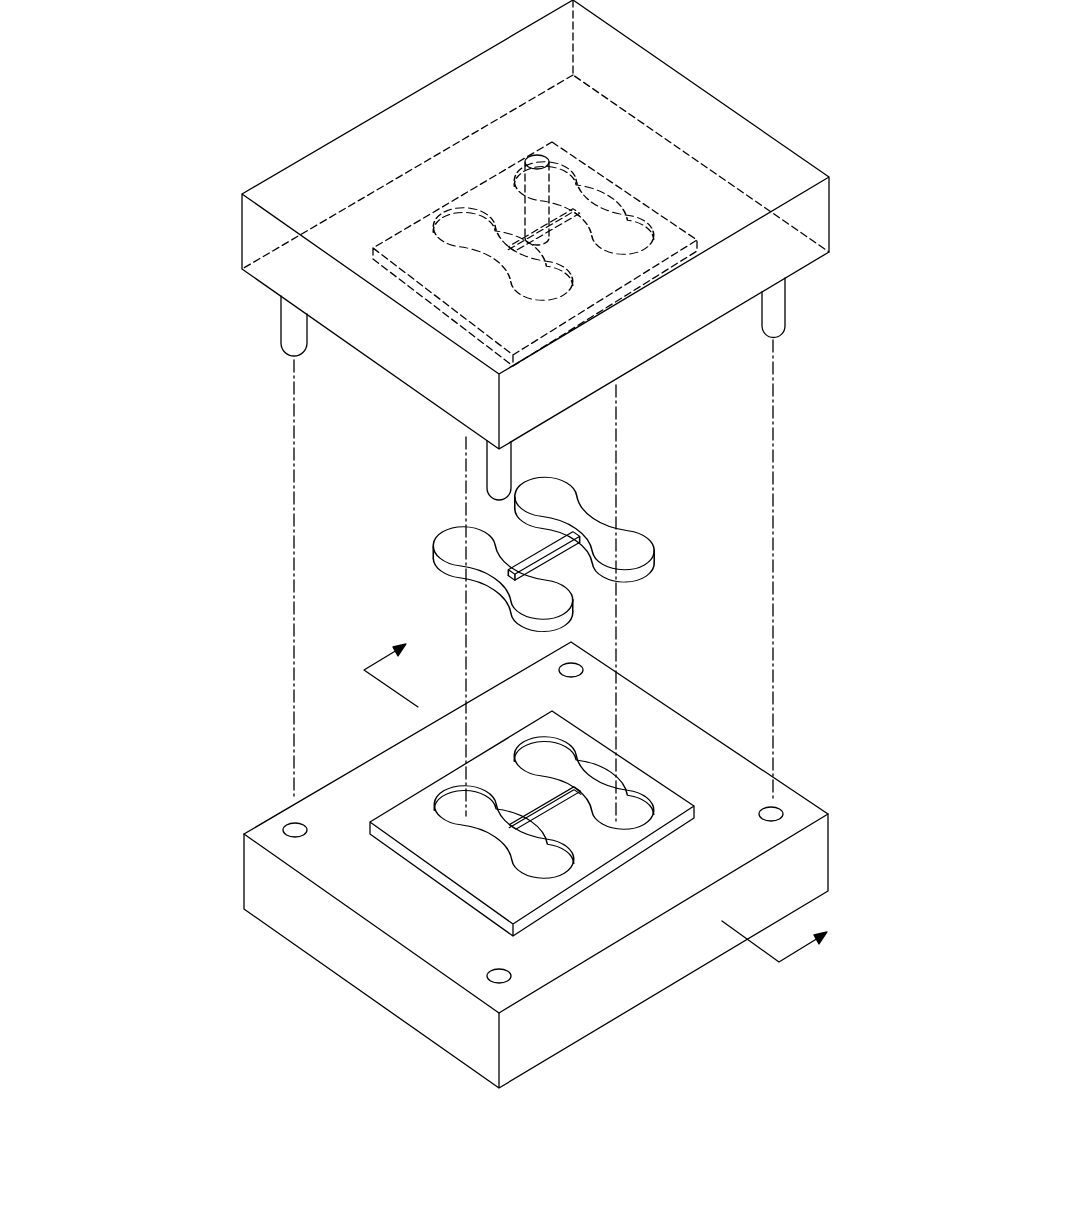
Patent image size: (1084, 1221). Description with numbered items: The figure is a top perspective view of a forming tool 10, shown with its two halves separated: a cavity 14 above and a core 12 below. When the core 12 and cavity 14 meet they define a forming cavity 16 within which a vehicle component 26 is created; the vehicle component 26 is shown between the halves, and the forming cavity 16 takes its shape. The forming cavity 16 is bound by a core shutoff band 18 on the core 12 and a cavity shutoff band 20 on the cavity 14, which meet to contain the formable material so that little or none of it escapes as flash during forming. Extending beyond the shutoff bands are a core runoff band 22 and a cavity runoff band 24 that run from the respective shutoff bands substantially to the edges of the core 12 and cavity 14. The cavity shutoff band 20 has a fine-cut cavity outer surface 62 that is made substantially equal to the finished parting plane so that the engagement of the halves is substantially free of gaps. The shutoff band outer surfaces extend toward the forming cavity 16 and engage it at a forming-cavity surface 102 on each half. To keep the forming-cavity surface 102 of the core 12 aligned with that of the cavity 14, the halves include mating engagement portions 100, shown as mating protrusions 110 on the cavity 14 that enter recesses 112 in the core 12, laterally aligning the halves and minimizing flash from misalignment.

The forming tool 10 is at (173, 124).
The core 12 is at (568, 865).
The cavity 14 is at (739, 98).
The forming cavity 16 is at (579, 744).
The core shutoff band 18 is at (441, 853).
The cavity shutoff band 20 is at (605, 205).
The core runoff band 22 is at (706, 770).
The cavity runoff band 24 is at (710, 203).
The vehicle component 26 is at (458, 536).
The cavity outer surface 62 is at (443, 207).
The mating engagement portions 100 is at (593, 551).
The forming-cavity surface 102 is at (578, 752).
The mating protrusions 110 is at (784, 322).
The recesses 112 is at (780, 810).